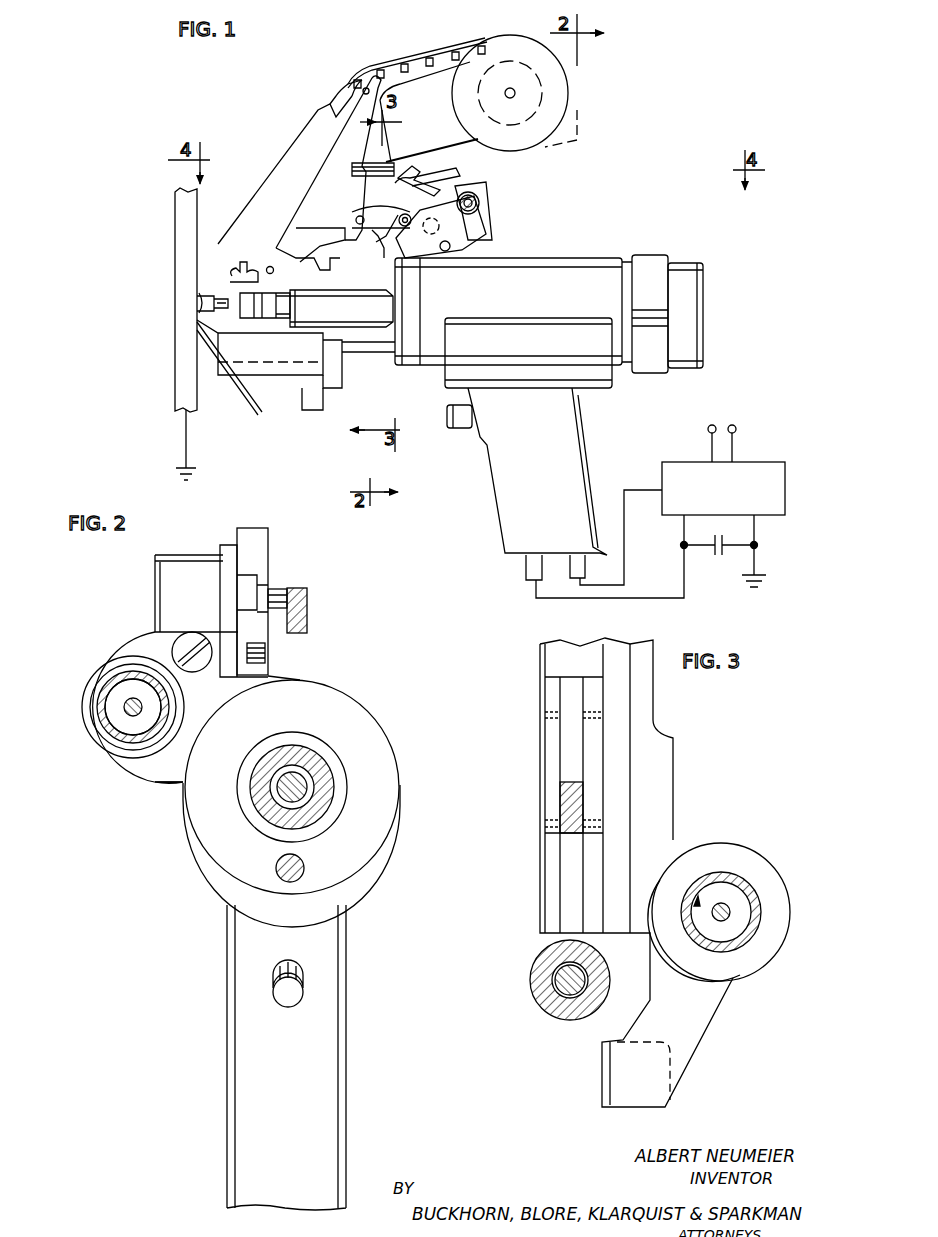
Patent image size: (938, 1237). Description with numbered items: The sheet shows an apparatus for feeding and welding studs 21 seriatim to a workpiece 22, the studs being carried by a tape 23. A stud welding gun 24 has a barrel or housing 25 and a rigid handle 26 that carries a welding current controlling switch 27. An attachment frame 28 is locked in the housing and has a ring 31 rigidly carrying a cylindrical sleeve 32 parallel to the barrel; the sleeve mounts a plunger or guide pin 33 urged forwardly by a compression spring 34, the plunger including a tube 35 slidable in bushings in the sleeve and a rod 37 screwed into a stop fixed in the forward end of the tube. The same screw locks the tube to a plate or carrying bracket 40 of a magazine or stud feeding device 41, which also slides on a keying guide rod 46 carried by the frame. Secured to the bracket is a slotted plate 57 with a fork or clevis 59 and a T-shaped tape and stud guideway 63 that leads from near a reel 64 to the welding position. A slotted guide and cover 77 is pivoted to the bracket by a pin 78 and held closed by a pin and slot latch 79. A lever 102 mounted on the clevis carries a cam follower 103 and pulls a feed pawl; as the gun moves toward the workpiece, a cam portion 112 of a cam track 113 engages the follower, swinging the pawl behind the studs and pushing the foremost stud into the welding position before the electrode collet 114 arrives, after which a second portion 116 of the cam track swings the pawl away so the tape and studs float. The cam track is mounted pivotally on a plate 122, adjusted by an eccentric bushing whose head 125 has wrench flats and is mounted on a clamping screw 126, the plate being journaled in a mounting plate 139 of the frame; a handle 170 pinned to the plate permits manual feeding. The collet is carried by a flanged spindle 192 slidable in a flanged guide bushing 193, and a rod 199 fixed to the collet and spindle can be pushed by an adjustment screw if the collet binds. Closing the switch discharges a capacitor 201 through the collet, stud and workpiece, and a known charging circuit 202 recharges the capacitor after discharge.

In FIG. 1, the studs 21 is at (198, 300).
In FIG. 1, the workpiece 22 is at (178, 325).
In FIG. 1, the tape 23 is at (474, 40).
In FIG. 1, the stud welding gun 24 is at (538, 240).
In FIG. 1, the barrel or housing 25 is at (603, 268).
In FIG. 1, the handle 26 is at (578, 415).
In FIG. 2, the handle 26 is at (338, 943).
In FIG. 1, the welding current controlling switch 27 is at (447, 414).
In FIG. 2, the welding current controlling switch 27 is at (303, 986).
In FIG. 2, the attachment frame 28 is at (364, 690).
In FIG. 2, the ring 31 is at (72, 666).
In FIG. 2, the cylindrical sleeve 32 is at (84, 698).
In FIG. 2, the plunger or guide pin 33 is at (144, 762).
In FIG. 2, the compression spring 34 is at (105, 716).
In FIG. 3, the compression spring 34 is at (745, 885).
In FIG. 2, the tube 35 is at (108, 742).
In FIG. 3, the tube 35 is at (724, 872).
In FIG. 2, the rod 37 is at (136, 712).
In FIG. 3, the rod 37 is at (735, 912).
In FIG. 1, the plate or carrying bracket 40 is at (356, 153).
In FIG. 3, the plate or carrying bracket 40 is at (662, 793).
In FIG. 1, the magazine or stud feeding device 41 is at (350, 60).
In FIG. 1, the keying guide rod 46 is at (362, 352).
In FIG. 2, the keying guide rod 46 is at (274, 862).
In FIG. 3, the slotted plate 57 is at (553, 665).
In FIG. 1, the fork or clevis 59 is at (338, 226).
In FIG. 3, the fork or clevis 59 is at (552, 747).
In FIG. 3, the tape and stud guideway 63 is at (565, 795).
In FIG. 1, the reel 64 is at (565, 88).
In FIG. 1, the slotted guide and cover 77 is at (312, 126).
In FIG. 1, the pin 78 is at (346, 84).
In FIG. 1, the pin and slot latch 79 is at (236, 268).
In FIG. 1, the lever 102 is at (388, 210).
In FIG. 2, the lever 102 is at (308, 625).
In FIG. 1, the cam follower 103 is at (448, 186).
In FIG. 1, the cam portion 112 is at (382, 246).
In FIG. 2, the cam portion 112 is at (266, 653).
In FIG. 1, the cam track 113 is at (476, 190).
In FIG. 2, the cam track 113 is at (245, 536).
In FIG. 1, the electrode collet 114 is at (283, 318).
In FIG. 1, the second portion of the cam track 116 is at (480, 226).
In FIG. 2, the plate 122 is at (222, 548).
In FIG. 1, the head 125 is at (477, 200).
In FIG. 1, the clamping screw 126 is at (480, 208).
In FIG. 2, the mounting plate 139 is at (155, 560).
In FIG. 1, the handle 170 is at (412, 184).
In FIG. 1, the flanged spindle 192 is at (326, 288).
In FIG. 2, the flanged spindle 192 is at (296, 828).
In FIG. 3, the flanged spindle 192 is at (540, 990).
In FIG. 2, the flanged guide bushing 193 is at (290, 742).
In FIG. 2, the rod 199 is at (300, 782).
In FIG. 3, the rod 199 is at (552, 970).
In FIG. 1, the capacitor 201 is at (712, 556).
In FIG. 1, the charging circuit 202 is at (762, 468).